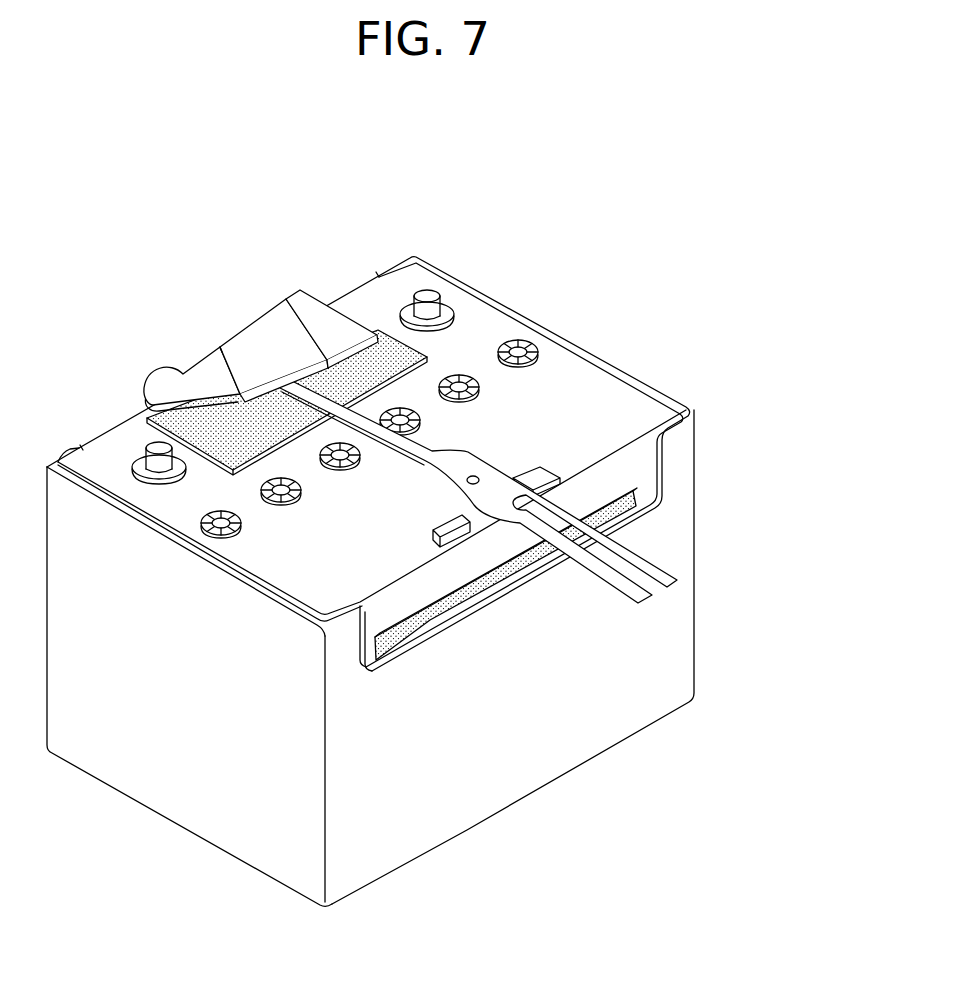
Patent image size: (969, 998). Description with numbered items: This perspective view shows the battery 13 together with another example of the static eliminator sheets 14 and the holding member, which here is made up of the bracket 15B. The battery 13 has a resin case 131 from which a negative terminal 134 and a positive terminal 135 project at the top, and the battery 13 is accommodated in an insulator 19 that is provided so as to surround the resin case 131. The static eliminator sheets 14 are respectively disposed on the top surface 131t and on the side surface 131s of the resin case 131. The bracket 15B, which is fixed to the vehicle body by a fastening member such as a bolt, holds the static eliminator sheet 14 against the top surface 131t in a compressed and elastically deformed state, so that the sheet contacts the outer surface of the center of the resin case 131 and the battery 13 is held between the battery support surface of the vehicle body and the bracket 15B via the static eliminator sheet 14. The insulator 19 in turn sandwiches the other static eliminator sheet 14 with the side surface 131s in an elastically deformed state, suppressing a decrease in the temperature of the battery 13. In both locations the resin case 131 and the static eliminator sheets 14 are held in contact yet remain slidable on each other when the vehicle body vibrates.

The battery 13 is at (437, 547).
The resin case 131 is at (368, 442).
The top surface 131t is at (477, 320).
The side surface 131s is at (467, 562).
The negative terminal 134 is at (426, 292).
The positive terminal 135 is at (166, 446).
The static eliminator sheets 14 is at (390, 333).
The bracket 15B is at (466, 462).
The insulator 19 is at (168, 745).